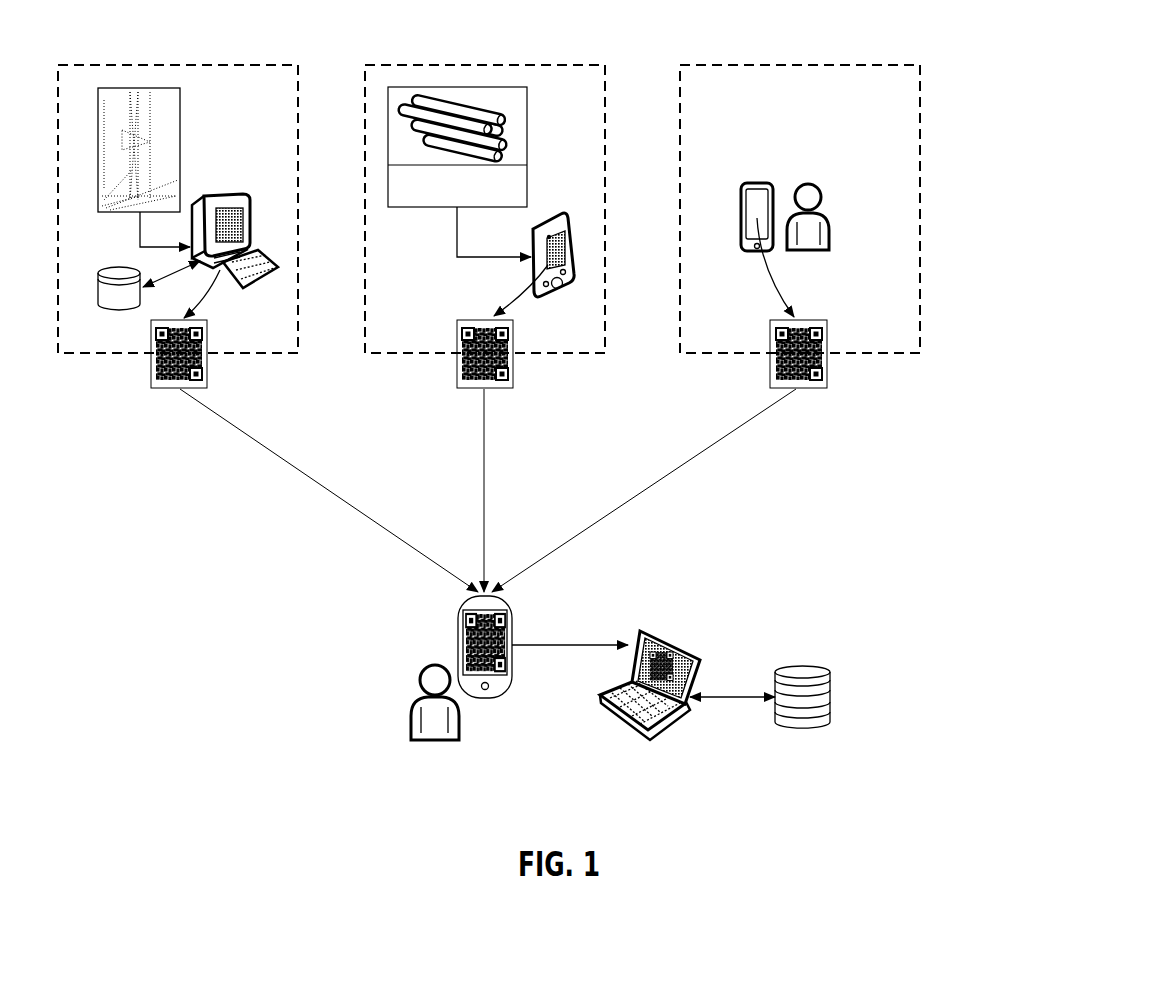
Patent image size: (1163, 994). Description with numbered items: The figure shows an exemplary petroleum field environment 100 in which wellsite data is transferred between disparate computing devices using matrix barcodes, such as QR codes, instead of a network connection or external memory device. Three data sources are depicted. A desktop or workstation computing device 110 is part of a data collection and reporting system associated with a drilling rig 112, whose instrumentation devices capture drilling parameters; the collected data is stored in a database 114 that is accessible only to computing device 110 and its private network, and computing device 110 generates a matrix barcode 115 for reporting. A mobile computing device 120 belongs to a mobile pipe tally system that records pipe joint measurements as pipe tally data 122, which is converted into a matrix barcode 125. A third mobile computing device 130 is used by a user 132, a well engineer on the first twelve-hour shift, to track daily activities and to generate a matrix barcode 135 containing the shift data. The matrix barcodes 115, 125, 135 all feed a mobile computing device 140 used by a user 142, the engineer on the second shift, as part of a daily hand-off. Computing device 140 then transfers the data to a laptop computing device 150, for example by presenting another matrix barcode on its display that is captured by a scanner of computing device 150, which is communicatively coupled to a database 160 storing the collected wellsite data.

The petroleum field environment 100 is at (1058, 105).
The computing device 110 is at (244, 190).
The drilling rig 112 is at (182, 109).
The database 114 is at (118, 268).
The matrix barcode 115 is at (151, 388).
The computing device 120 is at (543, 218).
The pipe tally data 122 is at (530, 127).
The matrix barcode 125 is at (458, 388).
The computing device 130 is at (754, 180).
The user 132 is at (815, 181).
The matrix barcode 135 is at (827, 388).
The computing device 140 is at (456, 622).
The user 142 is at (424, 676).
The computing device 150 is at (695, 656).
The database 160 is at (834, 677).